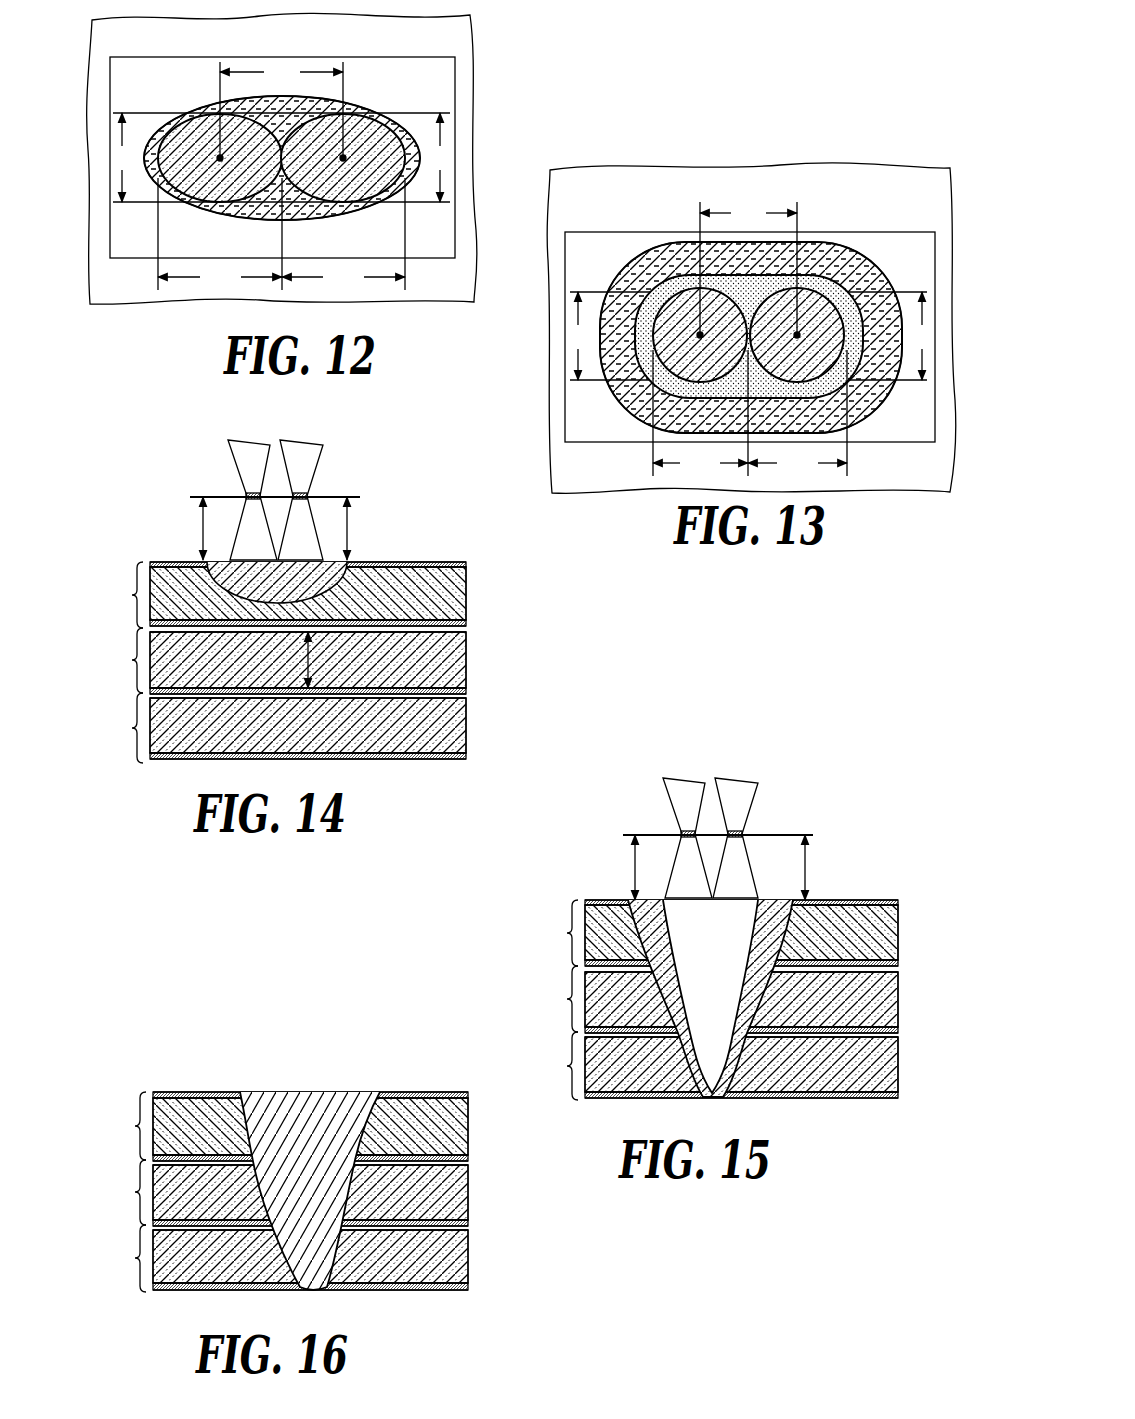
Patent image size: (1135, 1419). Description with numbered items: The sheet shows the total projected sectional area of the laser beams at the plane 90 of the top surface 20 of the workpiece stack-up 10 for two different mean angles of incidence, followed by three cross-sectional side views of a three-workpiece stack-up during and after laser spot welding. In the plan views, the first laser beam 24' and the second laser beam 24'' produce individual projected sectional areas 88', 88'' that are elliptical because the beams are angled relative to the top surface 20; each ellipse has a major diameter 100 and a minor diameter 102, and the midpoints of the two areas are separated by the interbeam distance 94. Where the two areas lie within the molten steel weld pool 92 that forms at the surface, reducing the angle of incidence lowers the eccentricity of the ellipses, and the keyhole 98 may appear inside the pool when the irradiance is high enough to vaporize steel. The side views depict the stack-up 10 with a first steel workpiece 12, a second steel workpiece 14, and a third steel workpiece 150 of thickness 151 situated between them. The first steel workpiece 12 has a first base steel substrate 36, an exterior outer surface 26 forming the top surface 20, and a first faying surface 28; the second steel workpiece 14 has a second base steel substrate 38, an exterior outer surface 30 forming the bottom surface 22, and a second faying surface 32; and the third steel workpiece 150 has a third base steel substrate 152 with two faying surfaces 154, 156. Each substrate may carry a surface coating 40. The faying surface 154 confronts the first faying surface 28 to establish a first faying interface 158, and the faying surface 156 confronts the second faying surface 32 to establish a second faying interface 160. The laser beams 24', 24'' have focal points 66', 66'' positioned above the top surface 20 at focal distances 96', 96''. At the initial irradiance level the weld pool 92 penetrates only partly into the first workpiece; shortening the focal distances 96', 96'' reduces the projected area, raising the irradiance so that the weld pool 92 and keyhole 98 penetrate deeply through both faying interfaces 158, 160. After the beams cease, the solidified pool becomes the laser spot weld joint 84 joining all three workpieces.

In FIG. 14, the workpiece stack-up 10 is at (80, 606).
In FIG. 15, the workpiece stack-up 10 is at (535, 1032).
In FIG. 16, the workpiece stack-up 10 is at (108, 1228).
In FIG. 14, the first steel workpiece 12 is at (135, 588).
In FIG. 15, the first steel workpiece 12 is at (570, 935).
In FIG. 16, the first steel workpiece 12 is at (137, 1122).
In FIG. 14, the second steel workpiece 14 is at (135, 725).
In FIG. 15, the second steel workpiece 14 is at (570, 1065).
In FIG. 16, the second steel workpiece 14 is at (138, 1258).
In FIG. 12, the top surface 20 is at (268, 47).
In FIG. 13, the top surface 20 is at (655, 207).
In FIG. 14, the top surface 20 is at (400, 560).
In FIG. 15, the top surface 20 is at (830, 900).
In FIG. 16, the top surface 20 is at (395, 1092).
In FIG. 14, the bottom surface 22 is at (360, 760).
In FIG. 15, the bottom surface 22 is at (793, 1098).
In FIG. 16, the bottom surface 22 is at (360, 1292).
In FIG. 14, the first laser beam 24' is at (335, 494).
In FIG. 15, the first laser beam 24' is at (771, 831).
In FIG. 14, the second laser beam 24'' is at (221, 492).
In FIG. 15, the second laser beam 24'' is at (655, 829).
In FIG. 14, the exterior outer surface 26 is at (462, 560).
In FIG. 15, the exterior outer surface 26 is at (872, 900).
In FIG. 16, the exterior outer surface 26 is at (430, 1092).
In FIG. 14, the first faying surface 28 is at (350, 625).
In FIG. 15, the first faying surface 28 is at (800, 965).
In FIG. 14, the exterior outer surface 30 is at (443, 760).
In FIG. 15, the exterior outer surface 30 is at (877, 1098).
In FIG. 16, the exterior outer surface 30 is at (445, 1292).
In FIG. 14, the second faying surface 32 is at (340, 690).
In FIG. 15, the second faying surface 32 is at (785, 1032).
In FIG. 14, the first base steel substrate 36 is at (450, 600).
In FIG. 15, the first base steel substrate 36 is at (880, 940).
In FIG. 14, the second base steel substrate 38 is at (440, 720).
In FIG. 15, the second base steel substrate 38 is at (870, 1055).
In FIG. 14, the surface coating 40 is at (462, 565).
In FIG. 15, the surface coating 40 is at (897, 903).
In FIG. 14, the focal point 66' is at (344, 476).
In FIG. 15, the focal point 66' is at (778, 814).
In FIG. 14, the focal point 66'' is at (214, 480).
In FIG. 15, the focal point 66'' is at (649, 819).
In FIG. 16, the laser spot weld joint 84 is at (300, 1112).
In FIG. 12, the individual projected sectional area 88' is at (363, 115).
In FIG. 13, the individual projected sectional area 88' is at (836, 316).
In FIG. 12, the individual projected sectional area 88'' is at (201, 115).
In FIG. 13, the individual projected sectional area 88'' is at (675, 293).
In FIG. 12, the plane of the top surface 90 is at (107, 80).
In FIG. 13, the plane of the top surface 90 is at (567, 250).
In FIG. 12, the molten steel weld pool 92 is at (295, 208).
In FIG. 13, the molten steel weld pool 92 is at (645, 278).
In FIG. 14, the molten steel weld pool 92 is at (260, 585).
In FIG. 15, the molten steel weld pool 92 is at (640, 935).
In FIG. 12, the distance 94 is at (281, 109).
In FIG. 13, the distance 94 is at (748, 268).
In FIG. 14, the focal distance 96' is at (393, 514).
In FIG. 15, the focal distance 96' is at (850, 853).
In FIG. 14, the focal distance 96'' is at (248, 528).
In FIG. 15, the focal distance 96'' is at (691, 867).
In FIG. 13, the keyhole 98 is at (770, 287).
In FIG. 15, the keyhole 98 is at (713, 930).
In FIG. 12, the major diameter 100 is at (281, 234).
In FIG. 13, the major diameter 100 is at (750, 413).
In FIG. 12, the minor diameter 102 is at (281, 157).
In FIG. 13, the minor diameter 102 is at (750, 336).
In FIG. 14, the third steel workpiece 150 is at (135, 660).
In FIG. 15, the third steel workpiece 150 is at (565, 995).
In FIG. 16, the third steel workpiece 150 is at (138, 1192).
In FIG. 14, the thickness 151 is at (305, 662).
In FIG. 14, the third base steel substrate 152 is at (445, 667).
In FIG. 15, the third base steel substrate 152 is at (878, 1005).
In FIG. 14, the faying surface 154 is at (375, 625).
In FIG. 15, the faying surface 154 is at (827, 963).
In FIG. 14, the faying surface 156 is at (330, 686).
In FIG. 15, the faying surface 156 is at (830, 1032).
In FIG. 14, the first faying interface 158 is at (243, 634).
In FIG. 15, the first faying interface 158 is at (643, 975).
In FIG. 16, the first faying interface 158 is at (240, 1165).
In FIG. 14, the second faying interface 160 is at (252, 700).
In FIG. 15, the second faying interface 160 is at (663, 1040).
In FIG. 16, the second faying interface 160 is at (250, 1232).